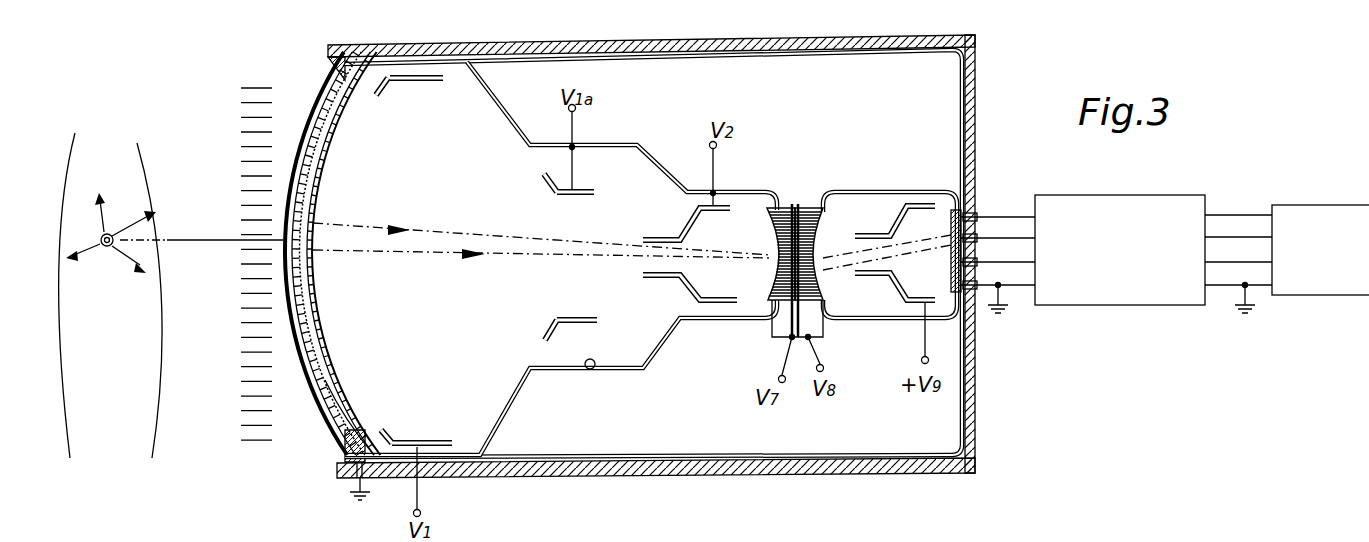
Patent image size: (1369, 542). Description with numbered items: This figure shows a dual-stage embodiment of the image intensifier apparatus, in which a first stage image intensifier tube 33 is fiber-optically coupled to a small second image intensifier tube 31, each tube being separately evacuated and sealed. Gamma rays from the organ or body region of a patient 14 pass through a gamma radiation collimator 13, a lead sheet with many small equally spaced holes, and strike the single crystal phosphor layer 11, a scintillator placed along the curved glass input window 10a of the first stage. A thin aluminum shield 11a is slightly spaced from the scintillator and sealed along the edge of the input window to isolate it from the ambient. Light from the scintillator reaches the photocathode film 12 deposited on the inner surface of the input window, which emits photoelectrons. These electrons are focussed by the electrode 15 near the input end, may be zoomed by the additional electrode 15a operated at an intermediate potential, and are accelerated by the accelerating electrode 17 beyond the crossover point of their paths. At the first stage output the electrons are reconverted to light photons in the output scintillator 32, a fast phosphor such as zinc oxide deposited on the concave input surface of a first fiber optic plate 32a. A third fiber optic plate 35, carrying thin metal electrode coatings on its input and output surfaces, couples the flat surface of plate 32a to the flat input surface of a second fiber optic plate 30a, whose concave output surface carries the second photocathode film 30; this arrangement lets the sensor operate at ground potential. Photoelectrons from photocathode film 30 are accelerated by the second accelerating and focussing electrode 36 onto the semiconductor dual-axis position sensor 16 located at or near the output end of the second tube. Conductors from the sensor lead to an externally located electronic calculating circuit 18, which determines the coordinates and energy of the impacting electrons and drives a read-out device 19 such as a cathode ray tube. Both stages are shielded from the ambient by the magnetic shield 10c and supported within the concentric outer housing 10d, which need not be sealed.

The glass input window 10a is at (360, 80).
The magnetic shield 10c is at (650, 455).
The concentric outer housing 10d is at (755, 478).
The single crystal phosphor layer 11 is at (323, 102).
The thin aluminum shield 11a is at (312, 400).
The photocathode film 12 is at (338, 378).
The gamma radiation collimator 13 is at (252, 440).
The patient 14 is at (160, 360).
The electrode 15 is at (432, 440).
The additional electrode 15a is at (568, 196).
The semiconductor dual-axis position sensor 16 is at (948, 262).
The accelerating electrode 17 is at (682, 278).
The electronic calculating circuit 18 is at (1170, 195).
The read-out device 19 is at (1332, 205).
The photocathode film 30 is at (823, 215).
The second fiber optic plate 30a is at (823, 305).
The second image intensifier tube 31 is at (960, 328).
The output scintillator 32 is at (765, 207).
The first fiber optic plate 32a is at (772, 305).
The first stage image intensifier tube 33 is at (592, 370).
The third fiber optic plate 35 is at (795, 208).
The second accelerating and focussing electrode 36 is at (903, 203).